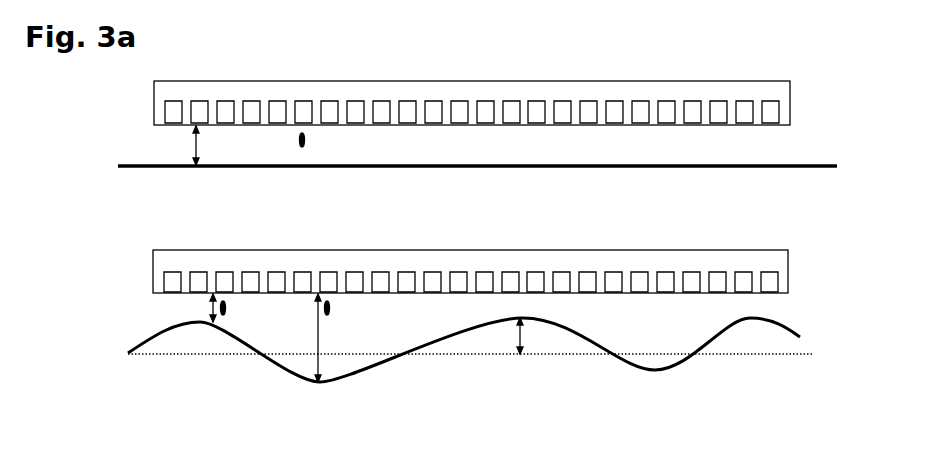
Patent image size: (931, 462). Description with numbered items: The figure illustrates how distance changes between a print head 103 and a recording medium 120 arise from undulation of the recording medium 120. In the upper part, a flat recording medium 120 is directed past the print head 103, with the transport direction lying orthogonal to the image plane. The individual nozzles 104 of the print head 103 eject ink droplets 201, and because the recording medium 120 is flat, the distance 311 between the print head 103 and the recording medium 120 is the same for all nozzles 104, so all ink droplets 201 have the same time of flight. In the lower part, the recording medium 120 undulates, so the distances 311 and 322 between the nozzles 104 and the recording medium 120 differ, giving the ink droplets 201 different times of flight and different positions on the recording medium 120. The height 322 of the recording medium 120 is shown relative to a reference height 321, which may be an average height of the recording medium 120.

The print head 103 is at (790, 92).
The nozzles 104 is at (716, 116).
The recording medium 120 is at (802, 163).
The ink droplets 201 is at (306, 139).
The distance 311 is at (182, 147).
The height 322 is at (515, 330).
The reference height 321 is at (812, 353).